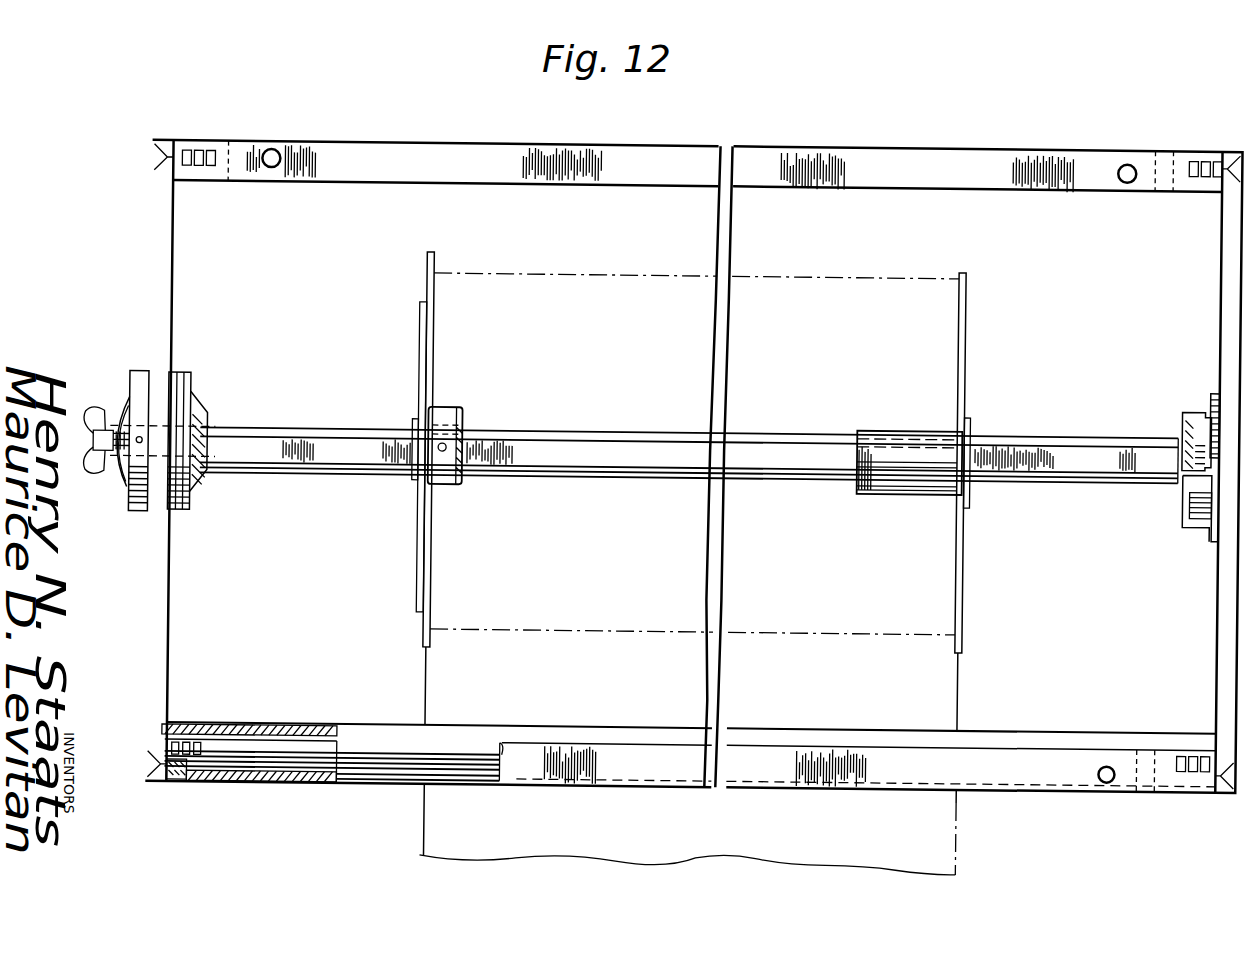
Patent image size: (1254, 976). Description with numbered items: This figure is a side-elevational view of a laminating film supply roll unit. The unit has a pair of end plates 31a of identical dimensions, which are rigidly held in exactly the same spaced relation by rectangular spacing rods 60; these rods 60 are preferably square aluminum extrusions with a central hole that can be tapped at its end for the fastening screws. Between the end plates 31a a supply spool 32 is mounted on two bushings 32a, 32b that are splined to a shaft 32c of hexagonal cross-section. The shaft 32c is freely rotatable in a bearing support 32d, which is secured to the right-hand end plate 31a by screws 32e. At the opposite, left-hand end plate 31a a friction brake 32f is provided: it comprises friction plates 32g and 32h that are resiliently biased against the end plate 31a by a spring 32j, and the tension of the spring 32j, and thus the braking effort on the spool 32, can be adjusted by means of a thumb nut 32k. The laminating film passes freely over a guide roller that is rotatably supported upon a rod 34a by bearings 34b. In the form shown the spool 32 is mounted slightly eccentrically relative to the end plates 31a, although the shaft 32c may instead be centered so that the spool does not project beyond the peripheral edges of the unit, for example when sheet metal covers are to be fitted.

The spacing rod 60 is at (462, 150).
The end plate 31a is at (165, 612).
The supply spool 32 is at (962, 395).
The bushing 32a is at (915, 408).
The bushing 32b is at (445, 487).
The shaft 32c is at (1045, 456).
The bearing support 32d is at (1186, 407).
The screw 32e is at (1182, 418).
The friction brake 32f is at (190, 520).
The friction plate 32g is at (196, 500).
The friction plate 32h is at (138, 378).
The spring 32j is at (120, 412).
The thumb nut 32k is at (96, 470).
The rod 34a is at (300, 745).
The bearing 34b is at (200, 776).